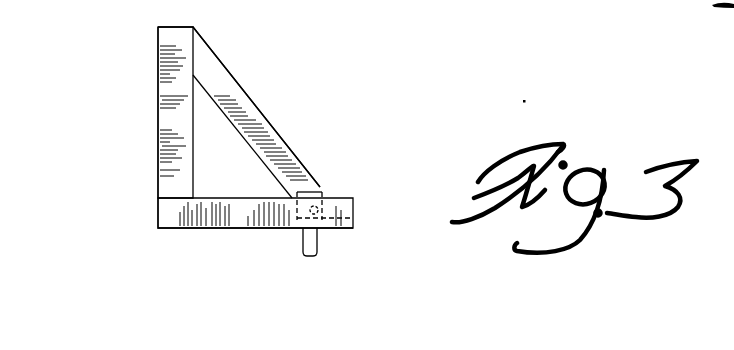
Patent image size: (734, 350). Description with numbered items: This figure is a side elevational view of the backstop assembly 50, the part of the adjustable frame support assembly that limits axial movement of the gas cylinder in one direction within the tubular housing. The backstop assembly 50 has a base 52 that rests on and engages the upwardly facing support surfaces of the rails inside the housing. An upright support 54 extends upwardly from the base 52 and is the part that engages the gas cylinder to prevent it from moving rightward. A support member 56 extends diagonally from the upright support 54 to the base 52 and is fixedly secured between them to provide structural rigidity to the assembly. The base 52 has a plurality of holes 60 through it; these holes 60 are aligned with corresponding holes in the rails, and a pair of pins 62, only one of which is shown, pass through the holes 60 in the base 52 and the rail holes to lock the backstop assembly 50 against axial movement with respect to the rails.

The backstop assembly 50 is at (247, 87).
The base 52 is at (222, 214).
The upright support 54 is at (166, 100).
The support member 56 is at (268, 125).
The holes 60 is at (355, 217).
The pins 62 is at (313, 183).